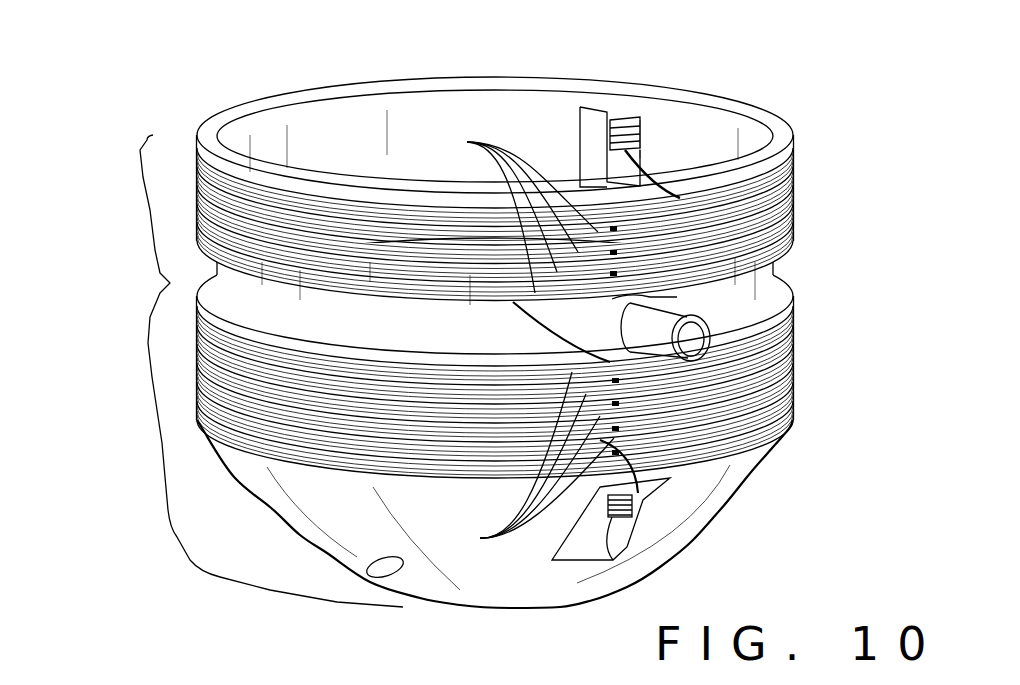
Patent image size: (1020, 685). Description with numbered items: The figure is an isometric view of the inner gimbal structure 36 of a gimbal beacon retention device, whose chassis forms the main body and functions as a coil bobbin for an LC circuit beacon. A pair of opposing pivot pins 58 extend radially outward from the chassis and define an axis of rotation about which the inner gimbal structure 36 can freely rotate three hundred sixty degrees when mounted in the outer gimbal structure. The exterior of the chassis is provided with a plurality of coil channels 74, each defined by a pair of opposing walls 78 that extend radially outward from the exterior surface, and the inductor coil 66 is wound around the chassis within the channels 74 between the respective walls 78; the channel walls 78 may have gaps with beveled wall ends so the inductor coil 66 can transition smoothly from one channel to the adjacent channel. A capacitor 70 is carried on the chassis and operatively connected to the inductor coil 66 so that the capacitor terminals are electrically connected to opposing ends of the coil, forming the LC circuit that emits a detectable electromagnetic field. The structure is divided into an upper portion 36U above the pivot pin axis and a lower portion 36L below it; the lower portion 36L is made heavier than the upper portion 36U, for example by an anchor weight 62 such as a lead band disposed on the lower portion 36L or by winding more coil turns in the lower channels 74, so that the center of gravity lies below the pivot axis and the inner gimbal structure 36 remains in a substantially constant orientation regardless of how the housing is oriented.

The inner gimbal structure 36 is at (120, 128).
The upper portion 36U is at (148, 208).
The lower portion 36L is at (160, 413).
The opposing walls 78 is at (193, 225).
The inductor coil 66 is at (633, 590).
The capacitor 70 is at (587, 153).
The coil channels 74 is at (855, 102).
The pivot pins 58 is at (697, 348).
The anchor weight 62 is at (700, 487).